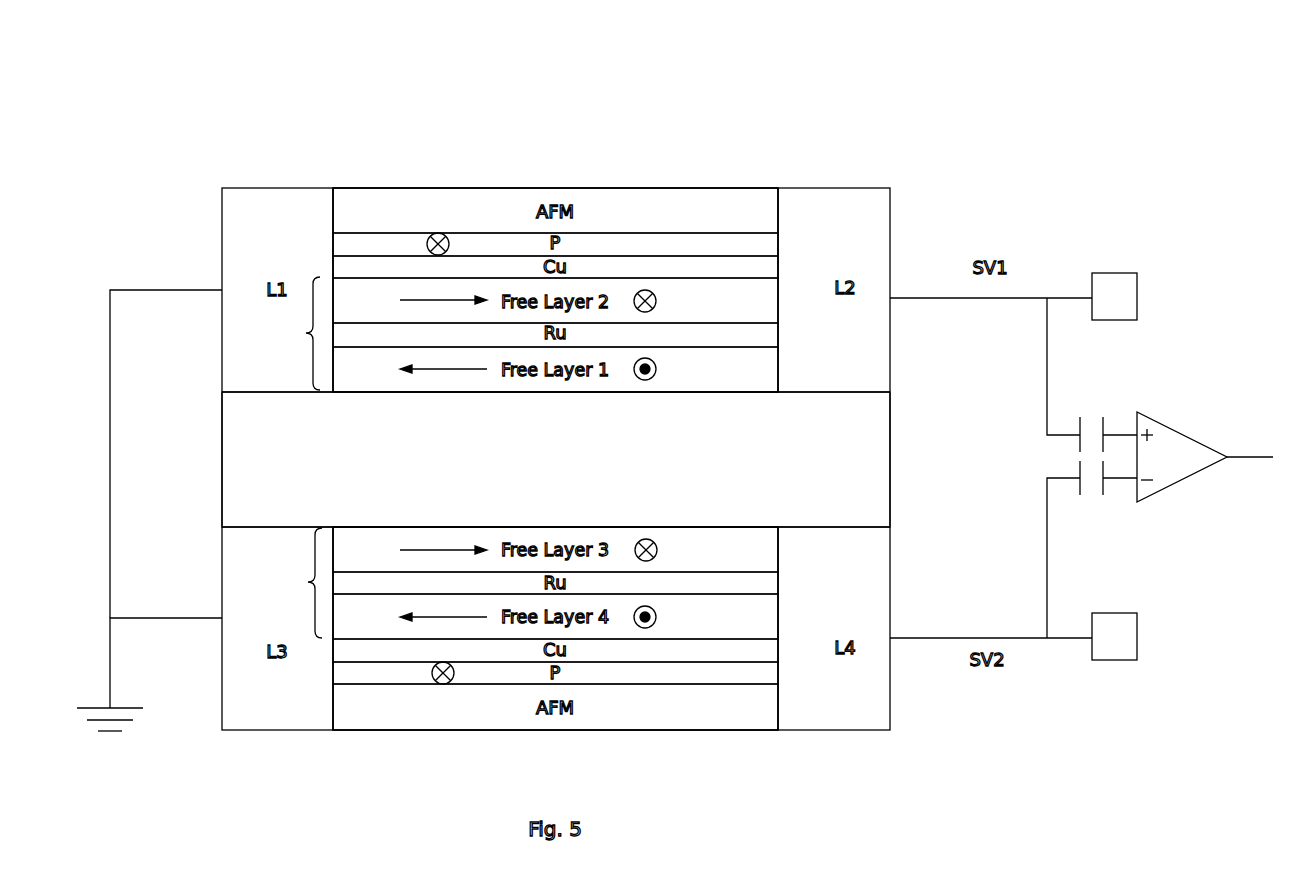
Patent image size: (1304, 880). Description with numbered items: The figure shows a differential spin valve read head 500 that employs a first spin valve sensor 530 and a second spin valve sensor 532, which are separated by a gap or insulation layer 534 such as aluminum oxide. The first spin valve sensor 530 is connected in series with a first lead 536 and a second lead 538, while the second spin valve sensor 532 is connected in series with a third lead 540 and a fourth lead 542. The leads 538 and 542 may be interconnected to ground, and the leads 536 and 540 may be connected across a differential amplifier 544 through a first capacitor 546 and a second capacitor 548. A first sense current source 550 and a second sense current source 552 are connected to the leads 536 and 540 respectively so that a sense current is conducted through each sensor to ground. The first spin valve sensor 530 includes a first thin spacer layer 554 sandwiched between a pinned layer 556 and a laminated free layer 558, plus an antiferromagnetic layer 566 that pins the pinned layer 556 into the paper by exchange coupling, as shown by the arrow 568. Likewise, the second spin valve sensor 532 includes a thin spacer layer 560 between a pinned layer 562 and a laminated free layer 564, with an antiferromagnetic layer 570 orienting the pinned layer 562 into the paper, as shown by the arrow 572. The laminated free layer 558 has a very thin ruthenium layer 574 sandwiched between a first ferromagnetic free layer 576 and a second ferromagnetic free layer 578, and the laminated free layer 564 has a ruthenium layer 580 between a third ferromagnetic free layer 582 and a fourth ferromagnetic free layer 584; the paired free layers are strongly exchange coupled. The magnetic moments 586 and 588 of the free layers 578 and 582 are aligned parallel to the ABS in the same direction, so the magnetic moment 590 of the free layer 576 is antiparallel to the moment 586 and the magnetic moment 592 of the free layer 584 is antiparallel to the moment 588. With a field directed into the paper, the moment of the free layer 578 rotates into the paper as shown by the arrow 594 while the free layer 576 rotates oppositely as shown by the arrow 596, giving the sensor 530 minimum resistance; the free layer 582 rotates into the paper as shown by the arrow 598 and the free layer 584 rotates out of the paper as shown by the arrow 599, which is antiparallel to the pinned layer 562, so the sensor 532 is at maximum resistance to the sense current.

The differential spin valve read head 500 is at (140, 95).
The first spin valve sensor 530 is at (562, 178).
The second spin valve sensor 532 is at (555, 733).
The gap or insulation layer 534 is at (862, 462).
The first lead 536 is at (1048, 377).
The second lead 538 is at (145, 288).
The third lead 540 is at (1048, 557).
The fourth lead 542 is at (142, 618).
The differential amplifier 544 is at (1177, 427).
The first capacitor 546 is at (1093, 413).
The second capacitor 548 is at (1093, 490).
The first sense current source 550 is at (1137, 295).
The second sense current source 552 is at (1117, 658).
The first thin spacer layer 554 is at (610, 267).
The pinned layer 556 is at (467, 243).
The laminated free layer 558 is at (288, 338).
The thin spacer layer 560 is at (500, 647).
The pinned layer 562 is at (620, 668).
The laminated free layer 564 is at (288, 577).
The antiferromagnetic layer 566 is at (395, 197).
The arrow 568 is at (438, 233).
The antiferromagnetic layer 570 is at (717, 708).
The arrow 572 is at (433, 682).
The ruthenium layer 574 is at (660, 332).
The first ferromagnetic free layer 576 is at (440, 380).
The second ferromagnetic free layer 578 is at (715, 302).
The ruthenium layer 580 is at (675, 580).
The third ferromagnetic free layer 582 is at (413, 535).
The fourth ferromagnetic free layer 584 is at (708, 613).
The magnetic moment 586 is at (433, 300).
The magnetic moment 588 is at (445, 547).
The magnetic moment 590 is at (448, 369).
The magnetic moment 592 is at (427, 613).
The arrow 594 is at (650, 291).
The arrow 596 is at (642, 380).
The arrow 598 is at (643, 539).
The arrow 599 is at (647, 628).